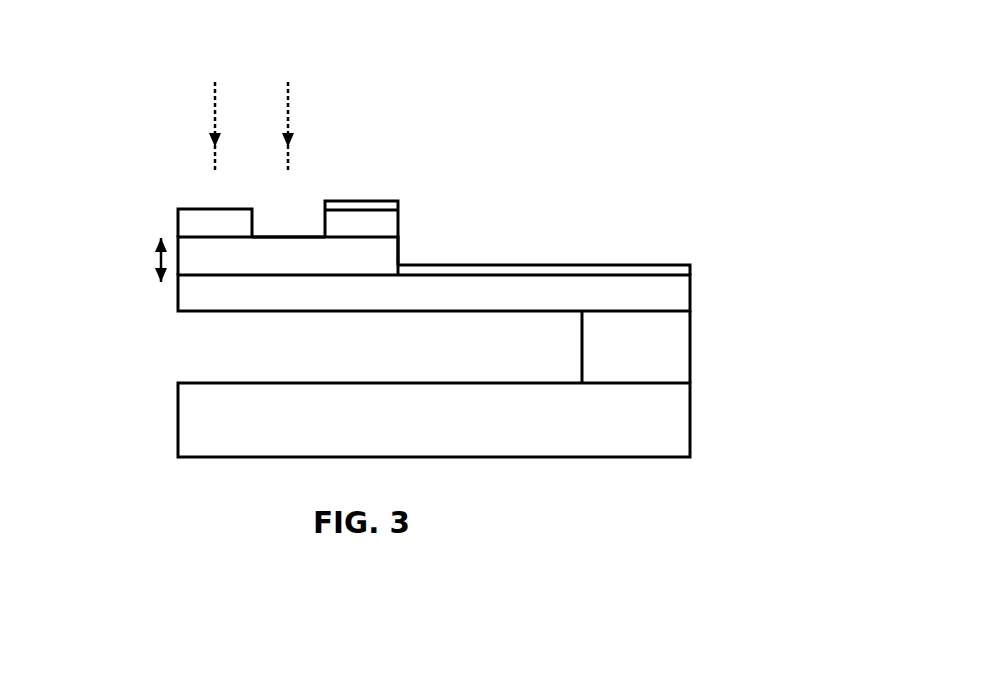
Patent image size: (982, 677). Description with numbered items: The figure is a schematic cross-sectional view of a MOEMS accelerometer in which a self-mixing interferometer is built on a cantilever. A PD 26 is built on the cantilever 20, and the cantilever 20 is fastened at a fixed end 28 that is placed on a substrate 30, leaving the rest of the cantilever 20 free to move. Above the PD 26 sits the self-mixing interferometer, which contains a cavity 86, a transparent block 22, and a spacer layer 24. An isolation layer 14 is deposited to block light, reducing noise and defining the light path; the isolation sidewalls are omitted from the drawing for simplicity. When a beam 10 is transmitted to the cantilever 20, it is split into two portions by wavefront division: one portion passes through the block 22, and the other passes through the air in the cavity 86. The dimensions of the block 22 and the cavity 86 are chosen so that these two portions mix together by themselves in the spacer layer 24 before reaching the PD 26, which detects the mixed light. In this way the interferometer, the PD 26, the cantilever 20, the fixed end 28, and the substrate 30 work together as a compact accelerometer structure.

The beam 10 is at (265, 97).
The isolation layer 14 is at (344, 200).
The cantilever 20 is at (495, 246).
The transparent block 22 is at (197, 218).
The spacer layer 24 is at (360, 256).
The PD 26 is at (434, 293).
The fixed end 28 is at (672, 347).
The substrate 30 is at (434, 420).
The cavity 86 is at (297, 210).